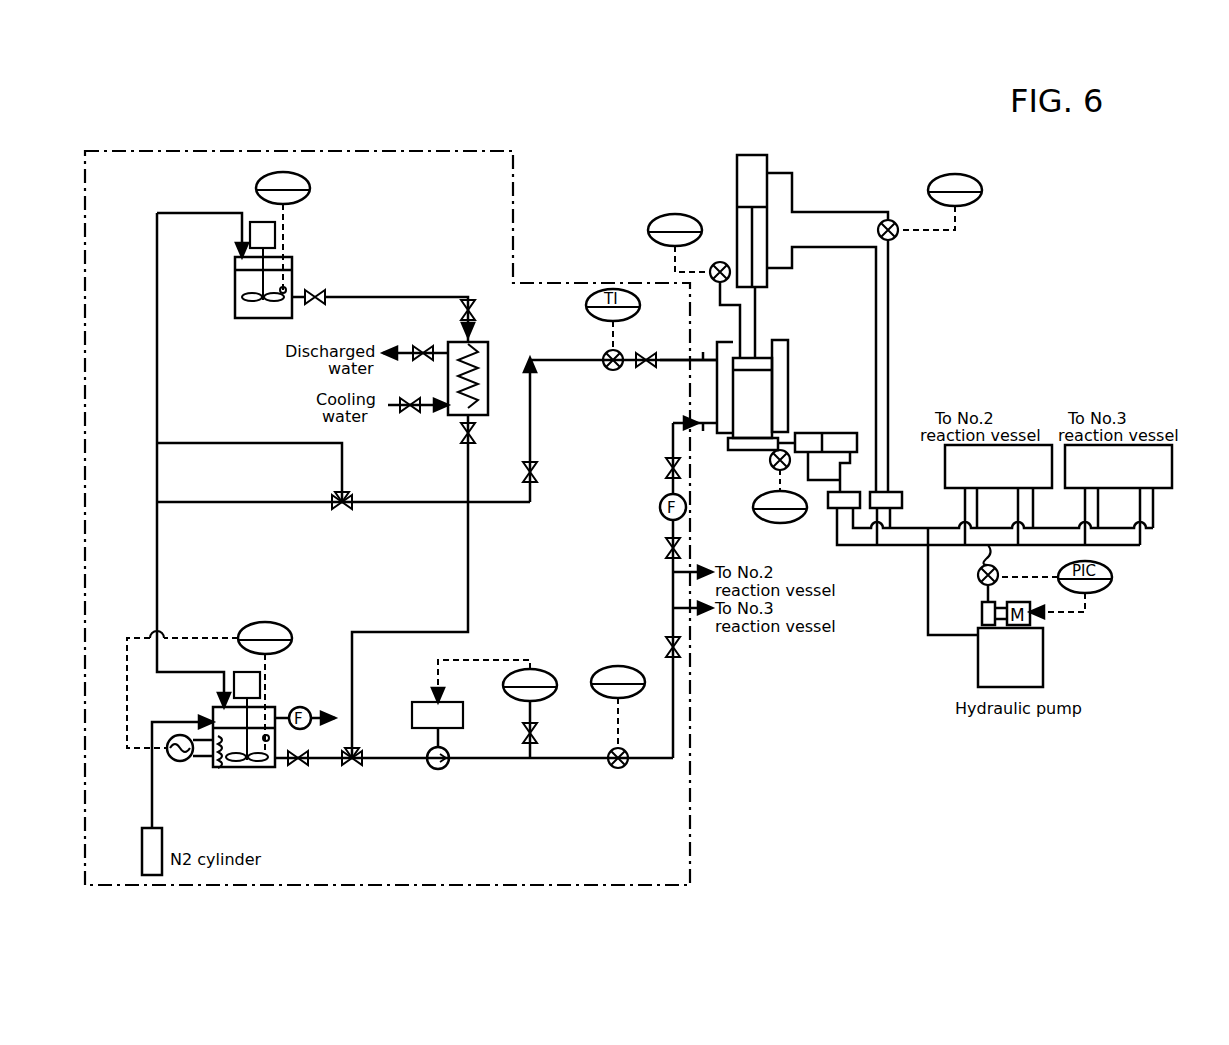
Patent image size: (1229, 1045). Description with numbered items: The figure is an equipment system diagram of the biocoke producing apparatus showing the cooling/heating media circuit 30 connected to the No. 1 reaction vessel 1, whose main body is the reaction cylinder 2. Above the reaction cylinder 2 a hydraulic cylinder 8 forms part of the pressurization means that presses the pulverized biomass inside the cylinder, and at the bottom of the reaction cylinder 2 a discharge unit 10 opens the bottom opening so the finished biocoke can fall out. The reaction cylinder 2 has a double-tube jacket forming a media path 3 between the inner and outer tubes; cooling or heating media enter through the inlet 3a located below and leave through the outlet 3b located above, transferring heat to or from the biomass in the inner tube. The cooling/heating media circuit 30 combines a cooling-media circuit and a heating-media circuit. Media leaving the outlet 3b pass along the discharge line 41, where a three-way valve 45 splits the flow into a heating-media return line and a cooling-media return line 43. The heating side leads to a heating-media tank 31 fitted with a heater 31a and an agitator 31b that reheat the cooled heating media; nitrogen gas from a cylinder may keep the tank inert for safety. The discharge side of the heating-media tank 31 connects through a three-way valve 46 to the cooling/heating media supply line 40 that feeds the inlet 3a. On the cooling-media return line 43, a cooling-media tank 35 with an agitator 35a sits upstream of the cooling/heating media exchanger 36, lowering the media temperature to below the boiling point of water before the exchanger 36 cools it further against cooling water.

The cooling/heating media circuit 30 is at (463, 151).
The cooling-media tank 35 is at (246, 266).
The agitator 35a is at (235, 297).
The cooling/heating media exchanger 36 is at (488, 348).
The discharge line 41 is at (531, 442).
The cooling-media return line 43 is at (240, 442).
The three-way valve 45 is at (344, 512).
The heating-media tank 31 is at (209, 722).
The heater 31a is at (178, 761).
The agitator 31b is at (262, 767).
The three-way valve 46 is at (354, 768).
The cooling/heating media supply line 40 is at (550, 760).
The No. 1 reaction vessel 1 is at (815, 298).
The hydraulic cylinder 8 is at (737, 184).
The reaction cylinder 2 is at (741, 422).
The media path 3 is at (717, 375).
The inlet 3a is at (702, 422).
The outlet 3b is at (702, 352).
The discharge unit 10 is at (840, 433).